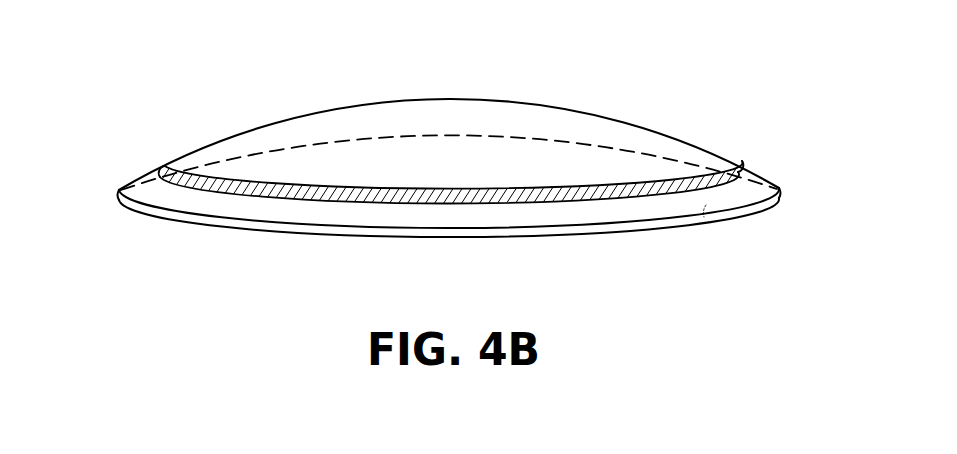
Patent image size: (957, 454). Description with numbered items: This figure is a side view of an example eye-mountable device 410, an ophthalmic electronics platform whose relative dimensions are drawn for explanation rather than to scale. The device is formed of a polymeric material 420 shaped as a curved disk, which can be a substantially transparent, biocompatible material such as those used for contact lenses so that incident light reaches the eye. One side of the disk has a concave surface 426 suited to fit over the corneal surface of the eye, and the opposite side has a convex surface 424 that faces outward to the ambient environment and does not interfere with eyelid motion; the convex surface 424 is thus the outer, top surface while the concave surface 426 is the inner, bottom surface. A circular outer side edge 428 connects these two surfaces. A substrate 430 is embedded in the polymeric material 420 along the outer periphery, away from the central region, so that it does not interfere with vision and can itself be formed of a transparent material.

The eye-mountable device 410 is at (212, 101).
The polymeric material 420 is at (205, 235).
The convex surface 424 is at (752, 167).
The concave surface 426 is at (702, 219).
The circular outer side edge 428 is at (597, 228).
The substrate 430 is at (174, 172).